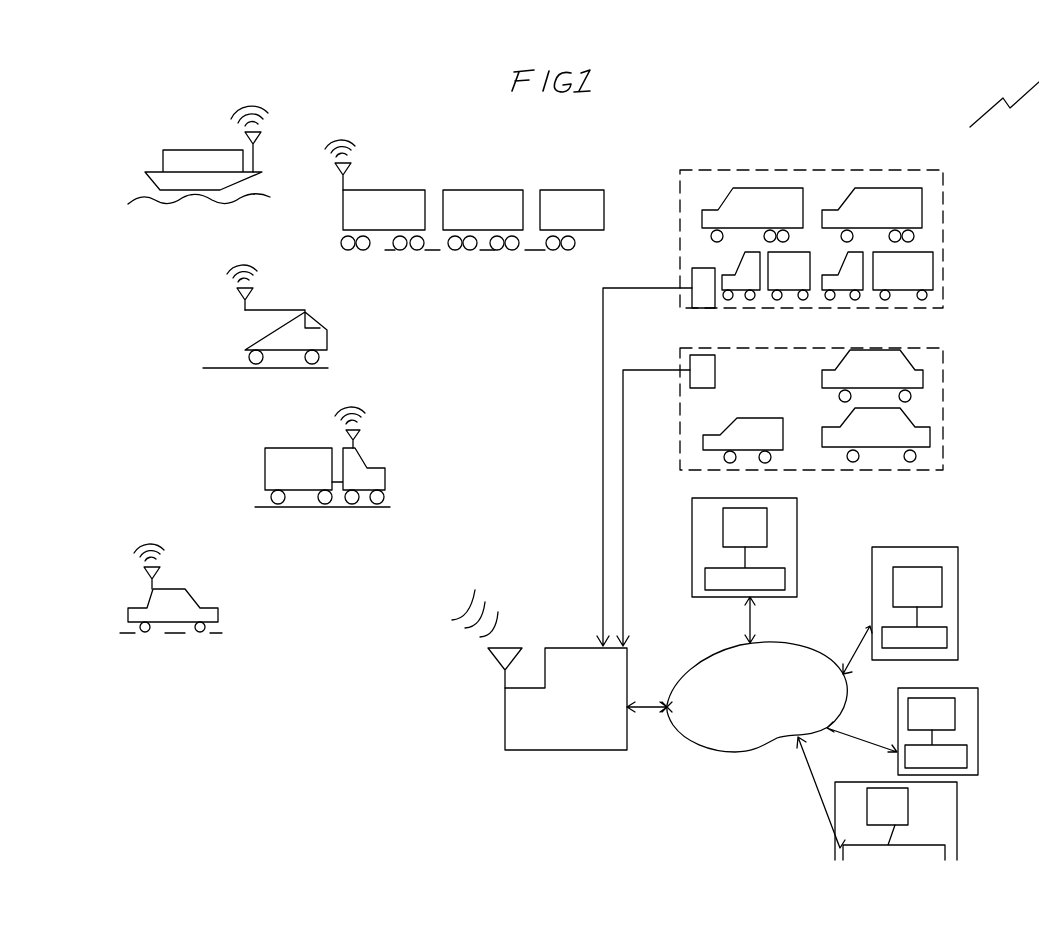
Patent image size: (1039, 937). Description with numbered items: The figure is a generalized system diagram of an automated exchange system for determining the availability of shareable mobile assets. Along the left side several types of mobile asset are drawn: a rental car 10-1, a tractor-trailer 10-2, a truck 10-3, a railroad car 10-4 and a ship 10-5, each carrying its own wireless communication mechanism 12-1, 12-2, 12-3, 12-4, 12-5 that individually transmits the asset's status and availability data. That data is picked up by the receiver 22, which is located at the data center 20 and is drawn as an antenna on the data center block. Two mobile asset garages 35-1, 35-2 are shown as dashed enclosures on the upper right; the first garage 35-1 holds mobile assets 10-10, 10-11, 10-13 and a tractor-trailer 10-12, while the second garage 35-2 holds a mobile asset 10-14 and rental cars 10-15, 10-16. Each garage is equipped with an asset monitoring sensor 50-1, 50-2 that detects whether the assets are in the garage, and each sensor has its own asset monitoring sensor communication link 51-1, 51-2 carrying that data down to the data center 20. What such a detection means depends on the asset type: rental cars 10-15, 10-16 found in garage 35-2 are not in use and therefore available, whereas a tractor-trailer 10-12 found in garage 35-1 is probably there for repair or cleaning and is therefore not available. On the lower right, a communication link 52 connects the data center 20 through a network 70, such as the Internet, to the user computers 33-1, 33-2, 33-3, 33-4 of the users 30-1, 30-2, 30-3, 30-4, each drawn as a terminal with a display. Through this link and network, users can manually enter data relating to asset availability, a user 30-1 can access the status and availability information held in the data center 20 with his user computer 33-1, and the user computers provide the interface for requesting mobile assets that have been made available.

The rental car 10-1 is at (175, 583).
The tractor-trailer 10-2 is at (366, 452).
The truck 10-3 is at (293, 308).
The railroad car 10-4 is at (390, 190).
The ship 10-5 is at (155, 151).
The wireless communication mechanism 12-1 is at (160, 566).
The wireless communication mechanism 12-2 is at (360, 432).
The wireless communication mechanism 12-3 is at (254, 289).
The wireless communication mechanism 12-4 is at (352, 166).
The wireless communication mechanism 12-5 is at (262, 134).
The mobile asset 10-10 is at (805, 196).
The mobile asset 10-11 is at (892, 187).
The tractor-trailer 10-12 is at (790, 252).
The mobile asset 10-13 is at (912, 252).
The mobile asset 10-14 is at (748, 418).
The rental car 10-15 is at (918, 352).
The rental car 10-16 is at (908, 418).
The mobile asset garage 35-1 is at (945, 192).
The mobile asset garage 35-2 is at (945, 362).
The asset monitoring sensor 50-1 is at (690, 275).
The asset monitoring sensor 50-2 is at (690, 352).
The asset monitoring sensor communication link 51-1 is at (602, 410).
The asset monitoring sensor communication link 51-2 is at (623, 430).
The communication link 52 is at (648, 688).
The data center 20 is at (570, 750).
The receiver 22 is at (510, 643).
The network 70 is at (720, 745).
The user 30-1 is at (958, 556).
The user 30-2 is at (975, 690).
The user 30-3 is at (958, 841).
The user 30-4 is at (797, 502).
The user computer 33-1 is at (942, 583).
The user computer 33-2 is at (955, 715).
The user computer 33-3 is at (914, 815).
The user computer 33-4 is at (770, 531).